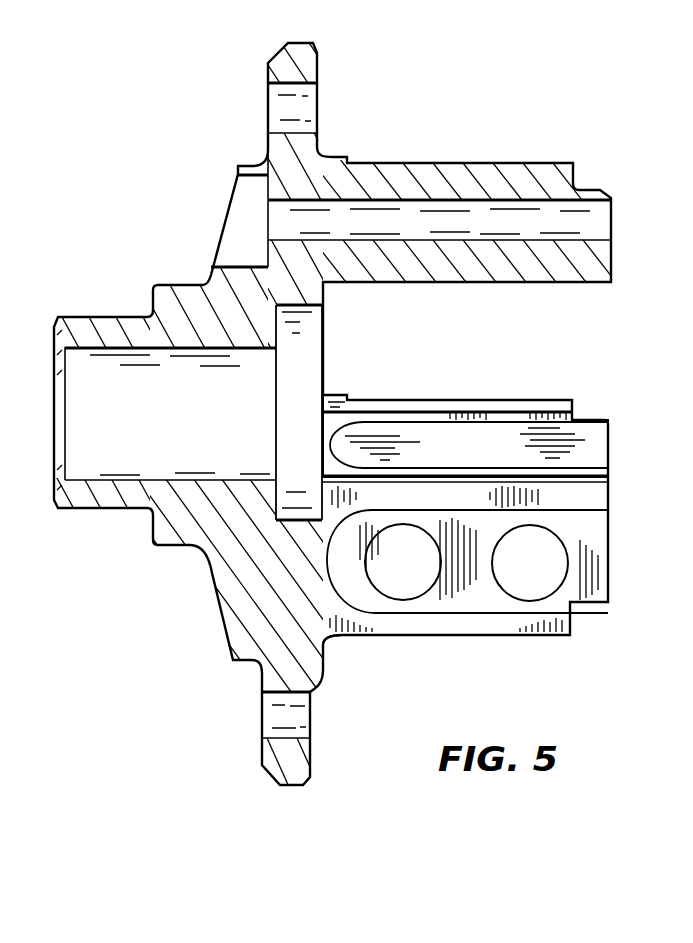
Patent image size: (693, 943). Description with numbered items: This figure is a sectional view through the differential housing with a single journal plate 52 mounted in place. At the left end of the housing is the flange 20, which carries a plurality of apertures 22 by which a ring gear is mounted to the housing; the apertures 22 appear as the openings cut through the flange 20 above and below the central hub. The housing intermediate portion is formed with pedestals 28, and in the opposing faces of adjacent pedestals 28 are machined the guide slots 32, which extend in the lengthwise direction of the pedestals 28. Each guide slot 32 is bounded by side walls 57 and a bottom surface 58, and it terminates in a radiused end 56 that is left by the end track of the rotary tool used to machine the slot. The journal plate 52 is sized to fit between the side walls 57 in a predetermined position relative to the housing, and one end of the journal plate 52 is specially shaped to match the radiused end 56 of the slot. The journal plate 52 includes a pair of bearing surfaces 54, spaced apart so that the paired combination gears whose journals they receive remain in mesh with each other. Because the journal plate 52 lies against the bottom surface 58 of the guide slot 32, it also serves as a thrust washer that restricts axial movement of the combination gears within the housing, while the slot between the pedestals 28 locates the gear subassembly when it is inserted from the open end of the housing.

The flange 20 is at (288, 53).
The apertures 22 is at (313, 88).
The pedestals 28 is at (525, 163).
The guide slots 32 is at (589, 442).
The journal plate 52 is at (596, 536).
The bearing surfaces 54 is at (428, 592).
The radiused end 56 is at (393, 416).
The side walls 57 is at (530, 418).
The bottom surface 58 is at (476, 452).